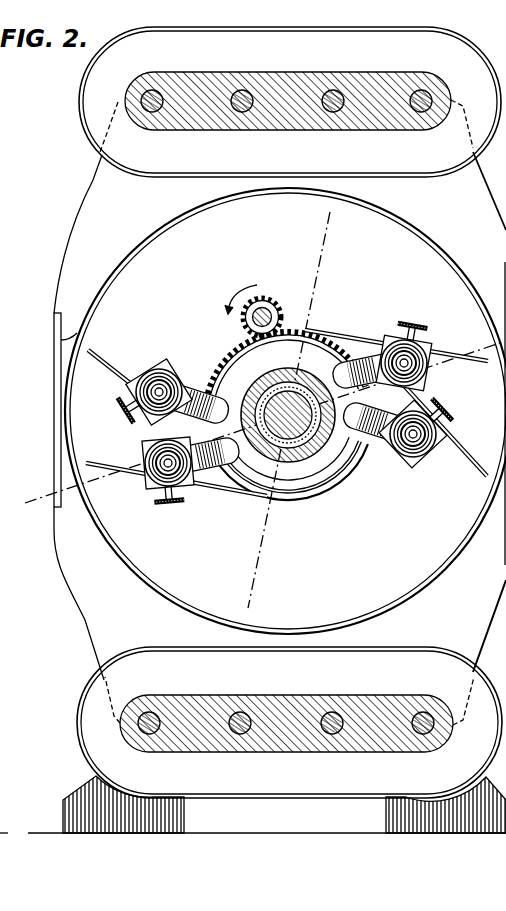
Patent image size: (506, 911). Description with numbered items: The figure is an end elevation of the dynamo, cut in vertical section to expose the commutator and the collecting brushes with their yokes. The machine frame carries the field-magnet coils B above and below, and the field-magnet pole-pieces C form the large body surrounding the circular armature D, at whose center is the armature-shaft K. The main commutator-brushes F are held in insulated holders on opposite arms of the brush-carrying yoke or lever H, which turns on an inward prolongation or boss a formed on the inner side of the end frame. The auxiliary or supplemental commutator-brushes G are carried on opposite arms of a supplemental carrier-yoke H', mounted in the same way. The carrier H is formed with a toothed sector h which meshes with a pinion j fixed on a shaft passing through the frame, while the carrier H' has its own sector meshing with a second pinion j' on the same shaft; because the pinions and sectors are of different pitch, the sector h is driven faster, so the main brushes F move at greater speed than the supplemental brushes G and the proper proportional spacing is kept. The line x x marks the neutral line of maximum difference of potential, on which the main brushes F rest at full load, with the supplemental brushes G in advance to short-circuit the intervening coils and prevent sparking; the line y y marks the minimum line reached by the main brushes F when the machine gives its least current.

The field-magnet coils B is at (289, 412).
The field-magnet pole-pieces C is at (280, 412).
The armature D is at (285, 411).
The main commutator-brushes F is at (287, 413).
The auxiliary or supplemental commutator-brushes G is at (287, 416).
The brush-carrying yoke or lever H is at (285, 417).
The supplemental carrier-yoke H' is at (288, 412).
The armature-shaft K is at (288, 415).
The boss a is at (276, 384).
The toothed sector h is at (288, 416).
The pinion j is at (260, 310).
The pinion j' is at (274, 302).
The neutral line x is at (256, 428).
The minimum line y is at (283, 412).